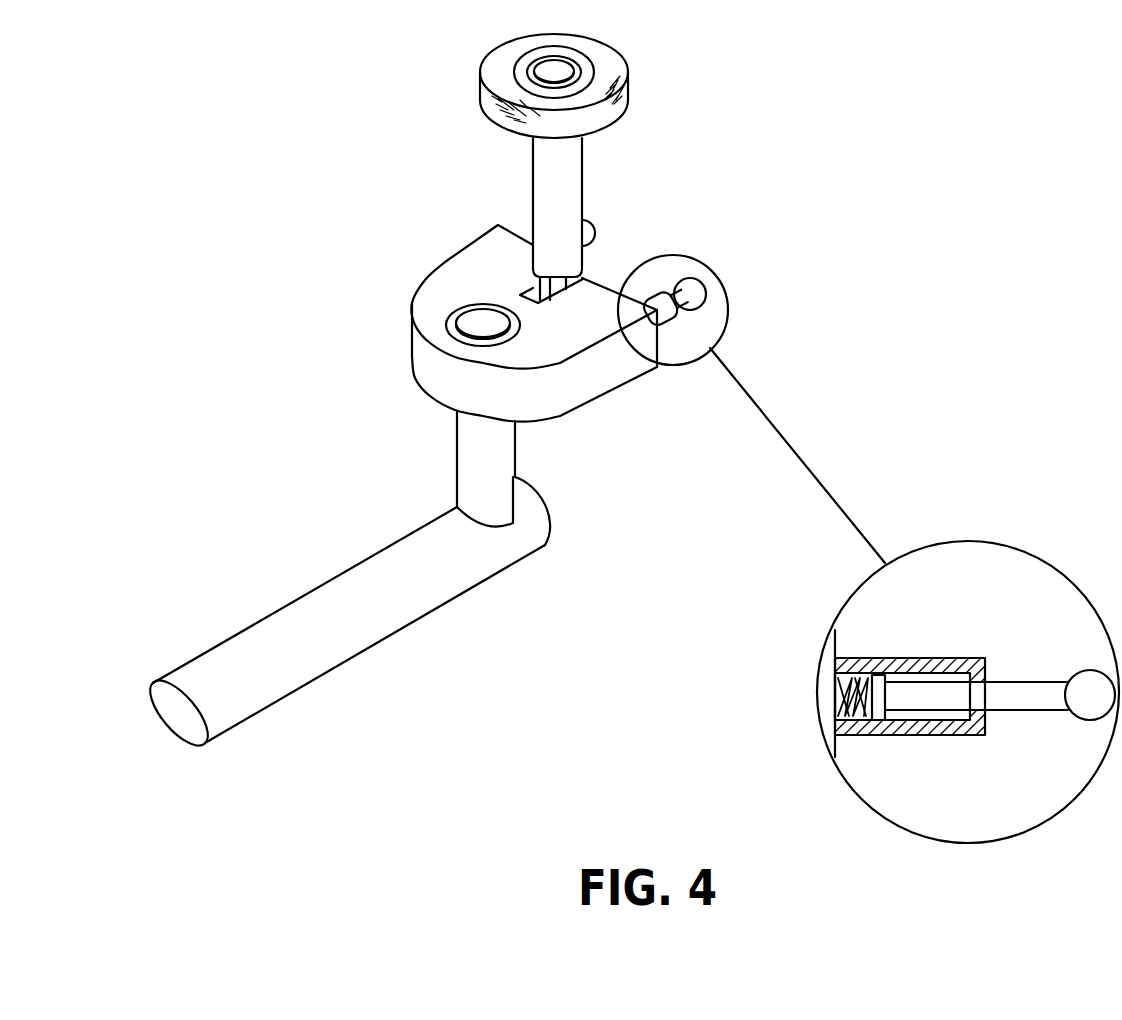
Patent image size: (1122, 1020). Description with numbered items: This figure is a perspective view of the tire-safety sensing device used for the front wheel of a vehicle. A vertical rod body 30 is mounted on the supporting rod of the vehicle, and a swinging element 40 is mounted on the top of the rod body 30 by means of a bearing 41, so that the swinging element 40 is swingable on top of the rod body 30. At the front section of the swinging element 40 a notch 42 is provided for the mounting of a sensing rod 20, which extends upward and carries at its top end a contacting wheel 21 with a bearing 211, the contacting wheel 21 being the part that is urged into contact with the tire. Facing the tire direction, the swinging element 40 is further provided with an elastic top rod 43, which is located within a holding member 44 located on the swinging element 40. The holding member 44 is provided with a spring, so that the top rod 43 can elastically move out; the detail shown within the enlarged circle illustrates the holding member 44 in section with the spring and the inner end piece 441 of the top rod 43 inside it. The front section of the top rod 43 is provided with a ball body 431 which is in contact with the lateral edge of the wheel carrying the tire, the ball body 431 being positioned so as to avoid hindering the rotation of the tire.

The sensing rod 20 is at (553, 208).
The contacting wheel 21 is at (622, 105).
The bearing 211 is at (578, 72).
The vertical rod body 30 is at (480, 479).
The swinging element 40 is at (588, 392).
The bearing 41 is at (455, 315).
The notch 42 is at (600, 268).
The elastic top rod 43 is at (1018, 700).
The ball body 431 is at (1088, 688).
The holding member 44 is at (947, 668).
The plate 441 is at (873, 722).